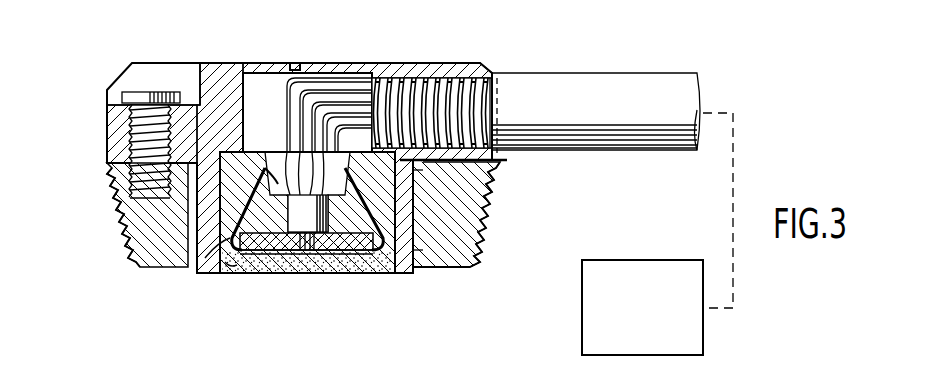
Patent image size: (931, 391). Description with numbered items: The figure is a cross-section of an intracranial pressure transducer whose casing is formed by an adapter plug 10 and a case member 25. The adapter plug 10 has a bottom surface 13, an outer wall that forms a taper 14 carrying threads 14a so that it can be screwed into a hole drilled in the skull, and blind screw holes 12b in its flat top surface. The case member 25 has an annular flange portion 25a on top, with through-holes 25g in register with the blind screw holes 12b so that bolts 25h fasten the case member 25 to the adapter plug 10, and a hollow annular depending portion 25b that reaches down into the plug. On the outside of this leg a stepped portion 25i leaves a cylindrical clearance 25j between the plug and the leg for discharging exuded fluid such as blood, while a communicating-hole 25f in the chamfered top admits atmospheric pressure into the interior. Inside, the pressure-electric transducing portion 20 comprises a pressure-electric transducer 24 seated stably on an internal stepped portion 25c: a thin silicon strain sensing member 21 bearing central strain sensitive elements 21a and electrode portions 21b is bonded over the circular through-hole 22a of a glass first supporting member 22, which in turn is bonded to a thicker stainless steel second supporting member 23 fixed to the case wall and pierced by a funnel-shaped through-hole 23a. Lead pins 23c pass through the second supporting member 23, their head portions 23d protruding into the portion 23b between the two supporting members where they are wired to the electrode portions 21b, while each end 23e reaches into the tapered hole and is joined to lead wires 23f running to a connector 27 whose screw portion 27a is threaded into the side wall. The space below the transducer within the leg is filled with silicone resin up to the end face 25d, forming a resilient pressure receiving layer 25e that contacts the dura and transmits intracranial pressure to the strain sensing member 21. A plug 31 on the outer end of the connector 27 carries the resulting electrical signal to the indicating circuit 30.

The adapter plug 10 is at (462, 217).
The blind screw holes 12b is at (112, 184).
The bottom surface 13 is at (452, 268).
The taper 14 is at (486, 204).
The threads 14a is at (118, 218).
The pressure-electric transducing portion 20 is at (355, 78).
The strain sensing member 21 is at (282, 258).
The strain sensitive elements 21a is at (305, 275).
The electrode portions 21b is at (250, 275).
The first supporting member 22 is at (348, 234).
The through-hole 22a is at (316, 272).
The second supporting member 23 is at (381, 185).
The funnel-shaped through-hole 23a is at (308, 209).
The portion 23b is at (212, 274).
The lead pins 23c is at (218, 156).
The head portions 23d is at (200, 262).
The end 23e is at (268, 165).
The lead wires 23f is at (330, 95).
The pressure-electric transducer 24 is at (260, 275).
The case member 25 is at (225, 152).
The annular flange portion 25a is at (110, 130).
The annular depending portion 25b is at (405, 273).
The stepped portion 25c is at (215, 105).
The end face 25d is at (220, 275).
The pressure receiving layer 25e is at (382, 274).
The communicating-hole 25f is at (296, 70).
The through-holes 25g is at (132, 112).
The bolts 25h is at (146, 95).
The stepped portion 25i is at (424, 172).
The cylindrical clearance 25j is at (440, 246).
The connector 27 is at (480, 72).
The screw portion 27a is at (422, 75).
The indicating circuit 30 is at (649, 312).
The plug 31 is at (594, 76).